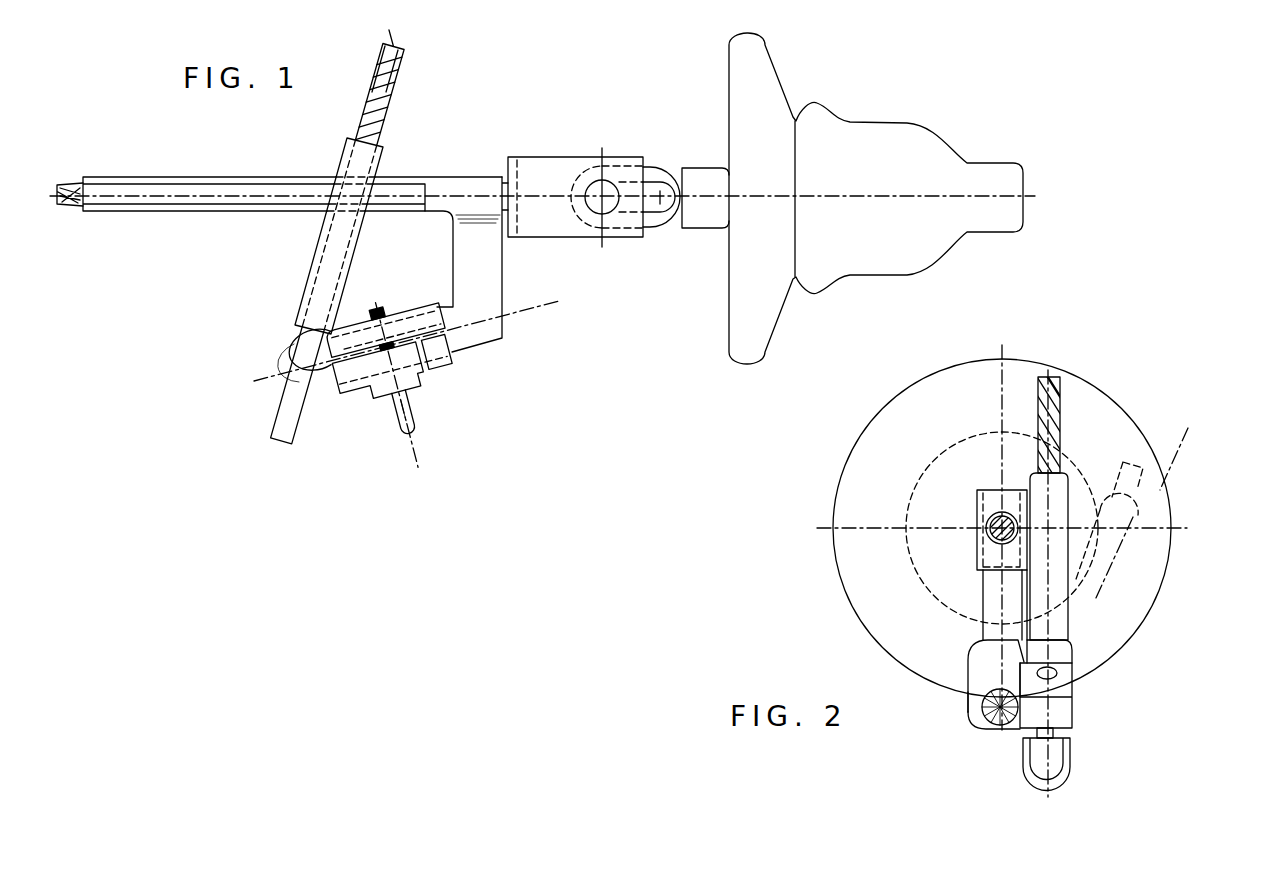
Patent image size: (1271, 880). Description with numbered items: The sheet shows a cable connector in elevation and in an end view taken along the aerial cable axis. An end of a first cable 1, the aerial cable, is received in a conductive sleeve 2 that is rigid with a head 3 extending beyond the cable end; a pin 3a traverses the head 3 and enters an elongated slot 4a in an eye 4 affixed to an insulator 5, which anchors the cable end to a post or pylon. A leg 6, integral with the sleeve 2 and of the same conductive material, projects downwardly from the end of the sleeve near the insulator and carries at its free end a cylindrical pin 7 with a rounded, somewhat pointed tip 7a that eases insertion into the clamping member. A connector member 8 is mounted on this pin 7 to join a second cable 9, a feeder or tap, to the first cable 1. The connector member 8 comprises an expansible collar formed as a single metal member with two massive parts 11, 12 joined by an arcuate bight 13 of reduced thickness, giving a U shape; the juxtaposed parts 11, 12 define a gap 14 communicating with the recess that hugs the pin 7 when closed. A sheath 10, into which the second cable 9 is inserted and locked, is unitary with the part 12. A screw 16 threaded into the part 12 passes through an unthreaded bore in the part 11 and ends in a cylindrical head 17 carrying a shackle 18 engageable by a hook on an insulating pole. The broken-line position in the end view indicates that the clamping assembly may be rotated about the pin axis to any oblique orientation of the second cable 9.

In FIG. 1, the first cable 1 is at (72, 204).
In FIG. 2, the first cable 1 is at (986, 535).
In FIG. 1, the sleeve 2 is at (198, 204).
In FIG. 2, the sleeve 2 is at (982, 520).
In FIG. 1, the head 3 is at (549, 232).
In FIG. 2, the head 3 is at (992, 497).
In FIG. 1, the pin 3a is at (605, 214).
In FIG. 1, the eye 4 is at (657, 165).
In FIG. 1, the elongated slot 4a is at (660, 206).
In FIG. 1, the insulator 5 is at (883, 135).
In FIG. 2, the insulator 5 is at (850, 485).
In FIG. 1, the leg 6 is at (468, 250).
In FIG. 2, the leg 6 is at (993, 597).
In FIG. 1, the pin 7 is at (323, 382).
In FIG. 2, the pin 7 is at (994, 712).
In FIG. 1, the tip 7a is at (293, 362).
In FIG. 1, the connector member 8 is at (473, 365).
In FIG. 2, the connector member 8 is at (955, 706).
In FIG. 1, the second cable 9 is at (400, 80).
In FIG. 2, the second cable 9 is at (1060, 418).
In FIG. 1, the sheath 10 is at (347, 158).
In FIG. 2, the sheath 10 is at (1063, 487).
In FIG. 1, the part 11 is at (365, 368).
In FIG. 2, the part 11 is at (1063, 713).
In FIG. 1, the part 12 is at (420, 306).
In FIG. 2, the part 12 is at (1112, 553).
In FIG. 2, the arcuate bight 13 is at (972, 670).
In FIG. 1, the gap 14 is at (440, 372).
In FIG. 2, the gap 14 is at (1080, 700).
In FIG. 1, the screw 16 is at (378, 306).
In FIG. 1, the cylindrical head 17 is at (417, 388).
In FIG. 2, the cylindrical head 17 is at (1030, 733).
In FIG. 1, the shackle 18 is at (405, 436).
In FIG. 2, the shackle 18 is at (1063, 768).